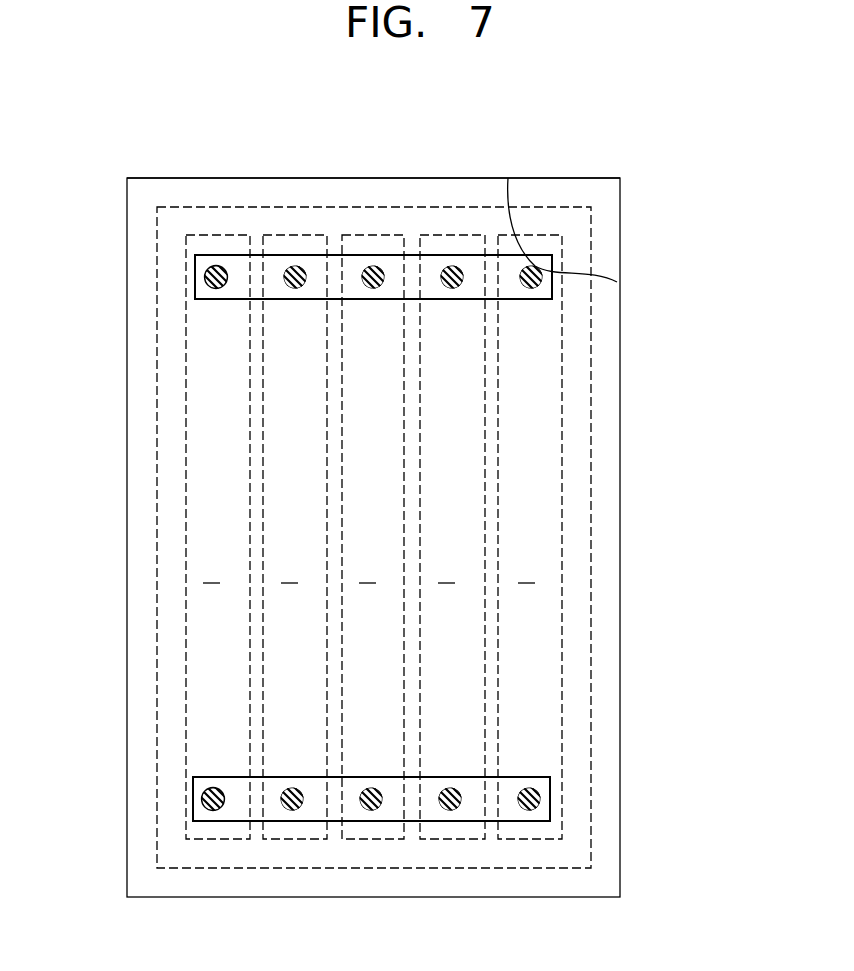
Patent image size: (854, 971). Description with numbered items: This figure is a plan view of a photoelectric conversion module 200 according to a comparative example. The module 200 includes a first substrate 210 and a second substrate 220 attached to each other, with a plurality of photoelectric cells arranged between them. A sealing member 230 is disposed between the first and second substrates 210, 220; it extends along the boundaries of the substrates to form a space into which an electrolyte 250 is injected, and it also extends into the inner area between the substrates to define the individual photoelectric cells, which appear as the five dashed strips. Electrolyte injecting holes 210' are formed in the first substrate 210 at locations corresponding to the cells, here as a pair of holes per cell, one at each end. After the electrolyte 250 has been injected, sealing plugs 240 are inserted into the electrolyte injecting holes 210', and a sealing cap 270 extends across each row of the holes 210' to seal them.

The photoelectric conversion module 200 is at (600, 165).
The first substrate 210 is at (373, 144).
The electrolyte injecting holes 210' is at (302, 538).
The second substrate 220 is at (612, 229).
The sealing member 230 is at (554, 218).
The sealing plugs 240 is at (297, 264).
The electrolyte 250 is at (542, 384).
The sealing cap 270 is at (222, 258).